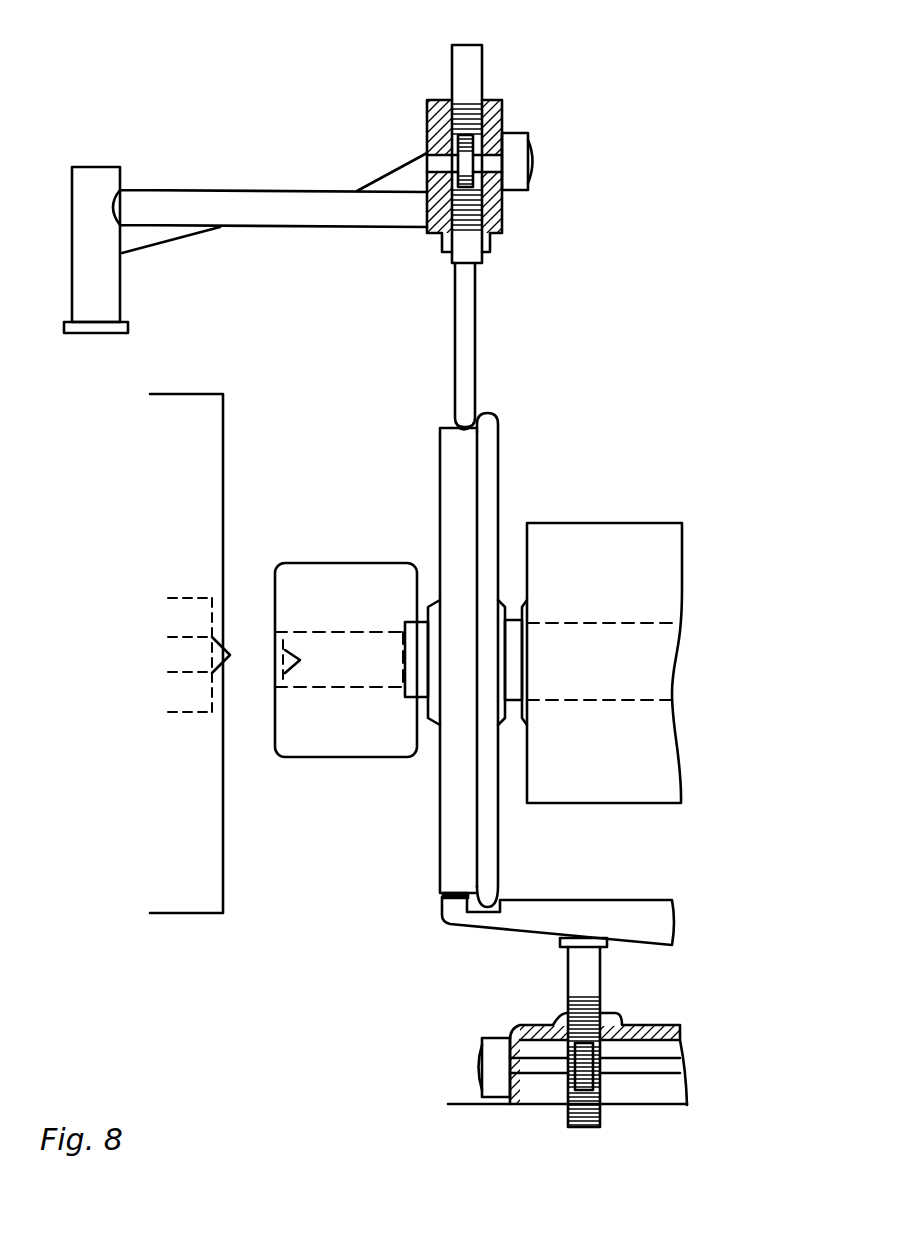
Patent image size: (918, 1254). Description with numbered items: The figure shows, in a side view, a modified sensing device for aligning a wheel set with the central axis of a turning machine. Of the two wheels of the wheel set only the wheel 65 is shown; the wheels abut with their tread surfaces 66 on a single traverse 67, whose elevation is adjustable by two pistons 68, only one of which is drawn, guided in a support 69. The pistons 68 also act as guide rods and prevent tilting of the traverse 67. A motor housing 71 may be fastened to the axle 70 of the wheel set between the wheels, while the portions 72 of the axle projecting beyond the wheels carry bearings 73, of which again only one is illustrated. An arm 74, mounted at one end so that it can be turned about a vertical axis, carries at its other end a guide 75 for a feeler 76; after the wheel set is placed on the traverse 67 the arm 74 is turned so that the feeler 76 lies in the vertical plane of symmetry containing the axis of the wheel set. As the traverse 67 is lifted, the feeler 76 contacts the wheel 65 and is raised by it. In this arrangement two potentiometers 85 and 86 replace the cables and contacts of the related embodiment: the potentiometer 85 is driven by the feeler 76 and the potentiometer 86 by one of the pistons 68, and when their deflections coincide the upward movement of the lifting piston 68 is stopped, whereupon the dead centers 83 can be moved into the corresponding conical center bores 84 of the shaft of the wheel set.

The wheel 65 is at (453, 840).
The tread surfaces 66 is at (457, 425).
The traverse 67 is at (590, 918).
The pistons 68 is at (588, 1008).
The support 69 is at (515, 1025).
The axle 70 is at (610, 672).
The motor housing 71 is at (568, 552).
The portions of the axle 72 is at (330, 678).
The bearings 73 is at (347, 593).
The arm 74 is at (297, 208).
The guide 75 is at (477, 123).
The feeler 76 is at (468, 330).
The dead centers 83 is at (225, 640).
The conical center bores 84 is at (275, 688).
The potentiometer 85 is at (517, 168).
The potentiometer 86 is at (495, 1067).